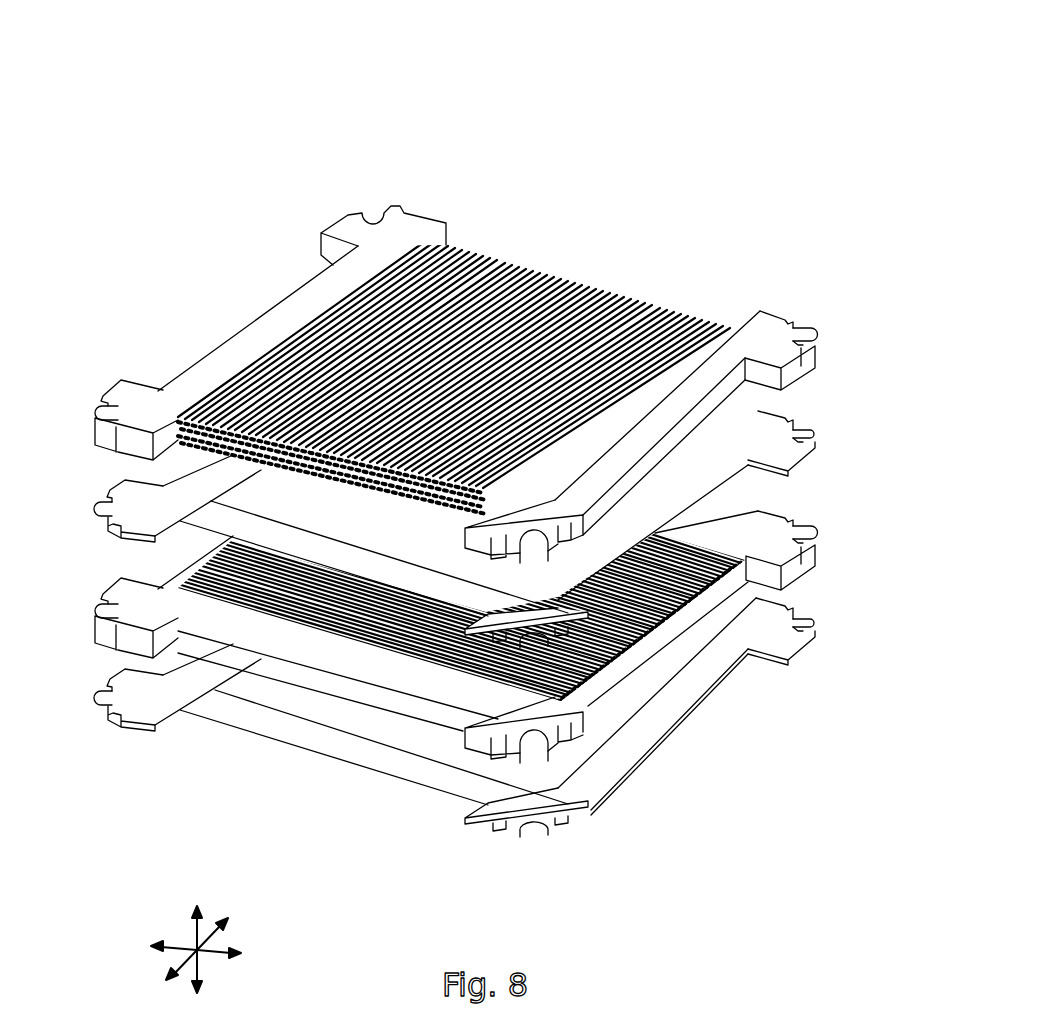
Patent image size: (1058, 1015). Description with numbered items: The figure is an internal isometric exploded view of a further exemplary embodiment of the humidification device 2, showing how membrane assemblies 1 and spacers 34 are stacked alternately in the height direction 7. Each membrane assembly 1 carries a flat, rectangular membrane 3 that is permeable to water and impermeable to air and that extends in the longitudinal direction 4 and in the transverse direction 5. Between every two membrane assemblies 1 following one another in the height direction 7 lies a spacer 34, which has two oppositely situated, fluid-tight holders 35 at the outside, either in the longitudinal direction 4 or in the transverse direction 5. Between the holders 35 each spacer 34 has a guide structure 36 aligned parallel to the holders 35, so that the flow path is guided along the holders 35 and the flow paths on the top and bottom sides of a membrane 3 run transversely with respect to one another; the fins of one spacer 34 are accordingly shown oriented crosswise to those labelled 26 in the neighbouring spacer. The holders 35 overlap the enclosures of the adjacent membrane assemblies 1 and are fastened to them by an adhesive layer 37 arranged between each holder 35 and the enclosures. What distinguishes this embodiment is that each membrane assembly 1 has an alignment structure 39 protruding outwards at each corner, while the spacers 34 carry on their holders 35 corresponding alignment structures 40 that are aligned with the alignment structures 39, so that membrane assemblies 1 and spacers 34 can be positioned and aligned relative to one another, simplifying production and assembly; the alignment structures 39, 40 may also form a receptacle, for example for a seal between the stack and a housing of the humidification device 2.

The membrane assembly 1 is at (469, 639).
The humidification device 2 is at (476, 460).
The membrane 3 is at (366, 524).
The longitudinal direction 4 is at (172, 942).
The transverse direction 5 is at (197, 923).
The height direction 7 is at (188, 922).
The first fin structure 26 is at (548, 270).
The spacer 34 is at (477, 473).
The holder 35 is at (408, 212).
The guide structure 36 is at (650, 632).
The adhesive layer 37 is at (792, 447).
The alignment structure 39 is at (810, 424).
The alignment structure 40 is at (372, 198).